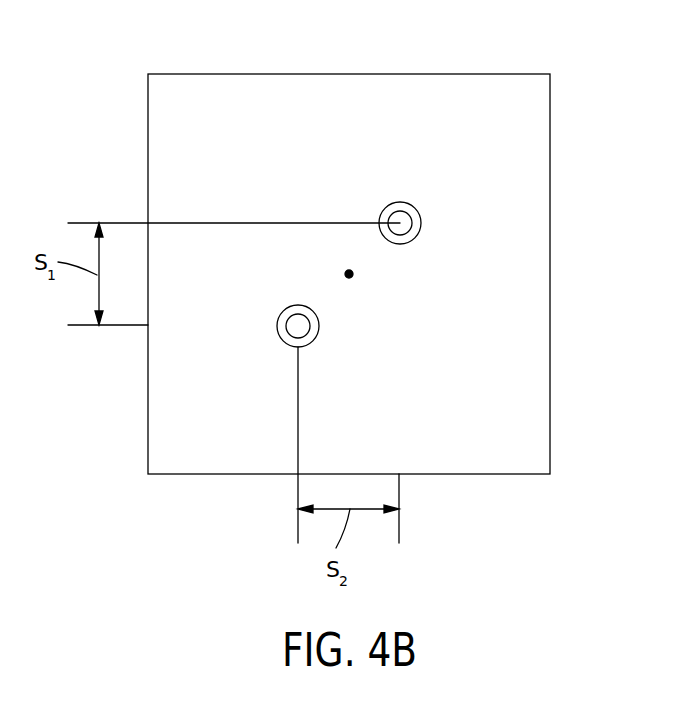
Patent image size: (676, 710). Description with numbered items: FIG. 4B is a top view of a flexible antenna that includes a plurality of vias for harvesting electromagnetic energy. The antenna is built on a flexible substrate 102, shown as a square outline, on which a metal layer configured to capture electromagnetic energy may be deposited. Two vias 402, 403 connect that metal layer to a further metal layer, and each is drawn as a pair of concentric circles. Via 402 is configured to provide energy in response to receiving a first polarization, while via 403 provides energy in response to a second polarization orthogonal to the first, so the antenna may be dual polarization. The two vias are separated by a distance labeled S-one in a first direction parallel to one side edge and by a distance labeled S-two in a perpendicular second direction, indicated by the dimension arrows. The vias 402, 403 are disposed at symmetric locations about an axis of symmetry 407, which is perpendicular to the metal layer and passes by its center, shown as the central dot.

The flexible substrate 102 is at (160, 83).
The via 402 is at (400, 223).
The via 403 is at (300, 326).
The axis of symmetry 407 is at (349, 274).